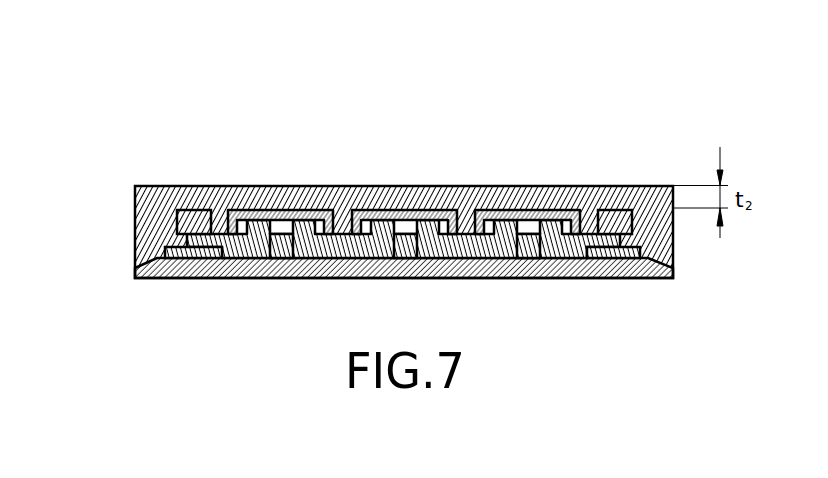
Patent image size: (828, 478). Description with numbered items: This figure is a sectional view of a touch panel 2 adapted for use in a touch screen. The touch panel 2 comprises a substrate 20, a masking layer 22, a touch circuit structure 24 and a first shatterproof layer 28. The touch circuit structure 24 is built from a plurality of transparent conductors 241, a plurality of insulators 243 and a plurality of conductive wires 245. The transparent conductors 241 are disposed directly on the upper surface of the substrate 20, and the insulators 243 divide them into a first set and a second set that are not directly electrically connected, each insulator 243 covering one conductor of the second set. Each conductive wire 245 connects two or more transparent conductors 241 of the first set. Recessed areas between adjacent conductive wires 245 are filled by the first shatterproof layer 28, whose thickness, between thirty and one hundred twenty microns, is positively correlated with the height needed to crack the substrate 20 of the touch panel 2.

The touch panel 2 is at (358, 158).
The substrate 20 is at (135, 272).
The masking layer 22 is at (163, 254).
The touch circuit structure 24 is at (363, 176).
The transparent conductors 241 is at (218, 234).
The insulators 243 is at (266, 216).
The conductive wires 245 is at (187, 210).
The first shatterproof layer 28 is at (137, 204).